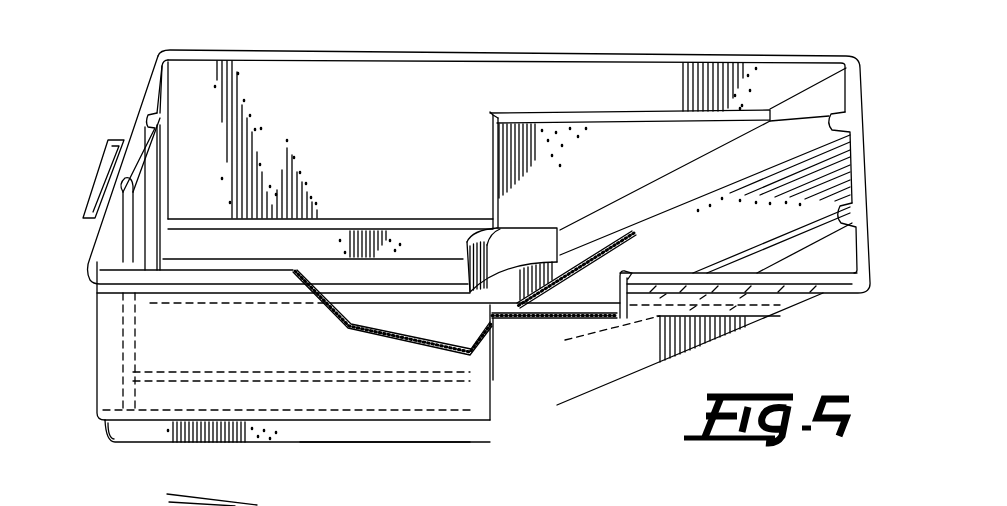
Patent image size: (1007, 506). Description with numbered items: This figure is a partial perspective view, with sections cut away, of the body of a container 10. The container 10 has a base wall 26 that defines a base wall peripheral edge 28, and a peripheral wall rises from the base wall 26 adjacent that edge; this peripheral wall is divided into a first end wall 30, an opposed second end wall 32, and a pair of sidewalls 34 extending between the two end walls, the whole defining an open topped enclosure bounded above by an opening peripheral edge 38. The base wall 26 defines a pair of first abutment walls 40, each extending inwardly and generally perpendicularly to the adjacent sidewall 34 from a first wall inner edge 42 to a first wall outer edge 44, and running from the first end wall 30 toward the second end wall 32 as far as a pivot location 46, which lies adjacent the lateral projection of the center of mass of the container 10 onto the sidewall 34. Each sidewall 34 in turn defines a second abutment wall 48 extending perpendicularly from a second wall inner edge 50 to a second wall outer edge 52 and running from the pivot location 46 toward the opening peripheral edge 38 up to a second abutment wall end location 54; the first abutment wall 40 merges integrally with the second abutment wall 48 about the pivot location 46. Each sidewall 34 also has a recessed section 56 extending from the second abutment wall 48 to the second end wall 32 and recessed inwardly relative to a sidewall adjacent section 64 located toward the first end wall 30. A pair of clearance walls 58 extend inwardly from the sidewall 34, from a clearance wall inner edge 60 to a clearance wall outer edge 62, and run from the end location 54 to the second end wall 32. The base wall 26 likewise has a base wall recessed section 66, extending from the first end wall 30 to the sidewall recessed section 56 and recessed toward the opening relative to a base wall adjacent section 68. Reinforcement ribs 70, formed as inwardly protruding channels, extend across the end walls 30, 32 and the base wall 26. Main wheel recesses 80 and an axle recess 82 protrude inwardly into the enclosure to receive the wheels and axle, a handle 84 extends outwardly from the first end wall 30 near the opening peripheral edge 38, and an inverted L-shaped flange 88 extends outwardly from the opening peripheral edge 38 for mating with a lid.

The container 10 is at (117, 82).
The base wall 26 is at (465, 332).
The base wall peripheral edge 28 is at (263, 219).
The first end wall 30 is at (112, 262).
The second end wall 32 is at (833, 97).
The sidewalls 34 is at (190, 83).
The opening peripheral edge 38 is at (788, 54).
The first abutment walls 40 is at (360, 228).
The first wall inner edge 42 is at (398, 230).
The first wall outer edge 44 is at (370, 212).
The pivot location 46 is at (500, 225).
The second abutment wall 48 is at (482, 140).
The second wall inner edge 50 is at (530, 228).
The second wall outer edge 52 is at (468, 242).
The second abutment wall end location 54 is at (513, 114).
The recessed section 56 is at (638, 368).
The clearance walls 58 is at (668, 108).
The clearance wall inner edge 60 is at (660, 100).
The clearance wall outer edge 62 is at (745, 108).
The sidewall adjacent section 64 is at (463, 397).
The base wall recessed section 66 is at (247, 445).
The base wall adjacent section 68 is at (300, 452).
The reinforcement ribs 70 is at (150, 128).
The main wheel recesses 80 is at (533, 262).
The axle recess 82 is at (522, 390).
The handle 84 is at (92, 183).
The inverted L-shaped flange 88 is at (843, 288).